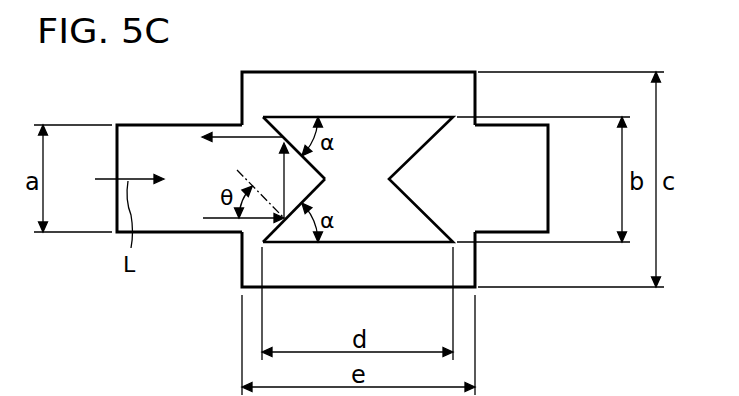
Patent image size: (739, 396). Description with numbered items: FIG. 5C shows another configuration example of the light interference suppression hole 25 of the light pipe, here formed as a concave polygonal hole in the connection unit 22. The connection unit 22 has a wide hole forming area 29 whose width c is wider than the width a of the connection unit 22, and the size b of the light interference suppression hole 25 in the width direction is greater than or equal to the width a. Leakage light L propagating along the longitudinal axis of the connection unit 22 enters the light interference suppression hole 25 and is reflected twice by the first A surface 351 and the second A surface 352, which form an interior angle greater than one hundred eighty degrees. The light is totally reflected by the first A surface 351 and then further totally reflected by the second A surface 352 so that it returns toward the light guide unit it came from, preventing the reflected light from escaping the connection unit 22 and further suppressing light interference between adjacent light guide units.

The connection unit 22 is at (155, 125).
The light interference suppression hole 25 is at (357, 118).
The hole forming area 29 is at (378, 85).
The first A surface 351 is at (285, 220).
The second A surface 352 is at (283, 137).